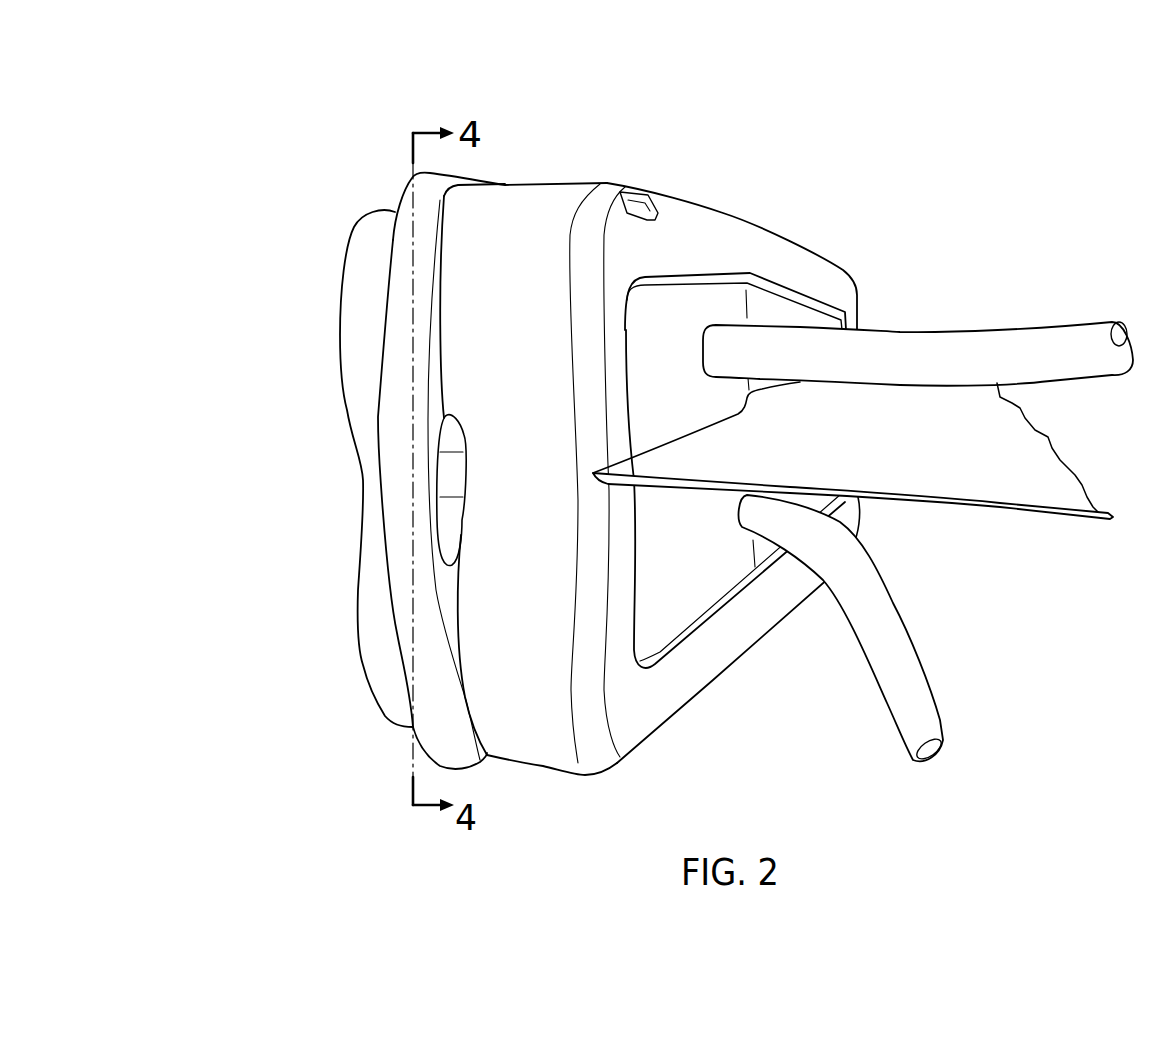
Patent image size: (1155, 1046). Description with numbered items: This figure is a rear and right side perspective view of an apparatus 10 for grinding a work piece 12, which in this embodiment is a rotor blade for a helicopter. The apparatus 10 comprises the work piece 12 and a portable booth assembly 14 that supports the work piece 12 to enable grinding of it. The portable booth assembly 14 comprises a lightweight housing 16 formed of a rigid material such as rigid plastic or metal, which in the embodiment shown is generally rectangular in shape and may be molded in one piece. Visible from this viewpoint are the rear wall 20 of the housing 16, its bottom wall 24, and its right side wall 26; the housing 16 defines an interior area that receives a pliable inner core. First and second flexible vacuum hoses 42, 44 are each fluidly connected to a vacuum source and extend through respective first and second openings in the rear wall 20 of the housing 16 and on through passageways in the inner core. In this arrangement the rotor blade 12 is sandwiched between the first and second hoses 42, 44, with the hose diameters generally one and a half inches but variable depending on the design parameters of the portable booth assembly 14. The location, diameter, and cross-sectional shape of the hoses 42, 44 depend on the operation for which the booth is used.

The apparatus 10 is at (224, 139).
The work piece 12 is at (1033, 470).
The portable booth assembly 14 is at (343, 234).
The housing 16 is at (339, 358).
The rear wall 20 is at (763, 253).
The bottom wall 24 is at (705, 690).
The right side wall 26 is at (540, 707).
The first flexible vacuum hose 42 is at (1043, 330).
The second flexible vacuum hose 44 is at (923, 667).